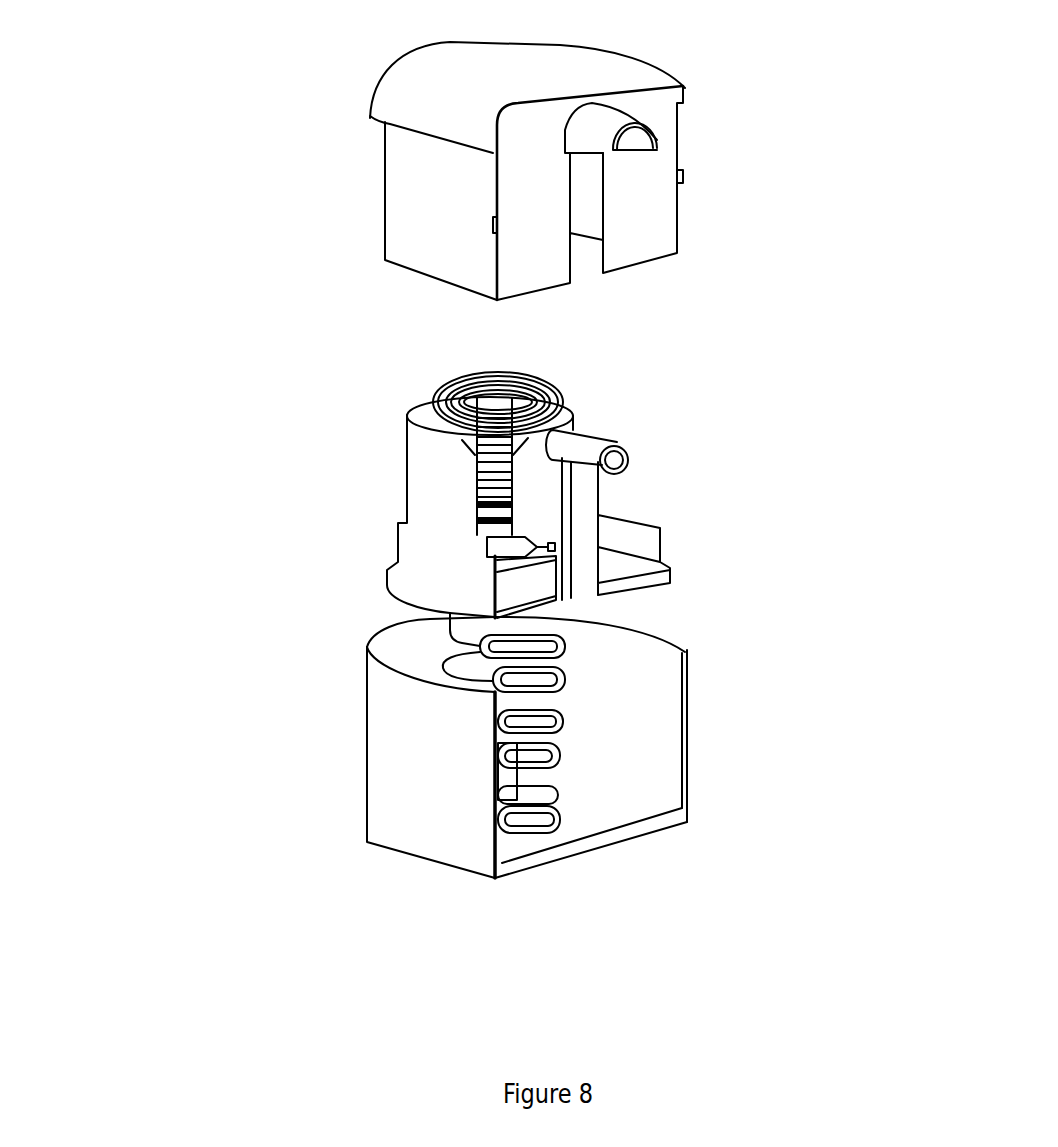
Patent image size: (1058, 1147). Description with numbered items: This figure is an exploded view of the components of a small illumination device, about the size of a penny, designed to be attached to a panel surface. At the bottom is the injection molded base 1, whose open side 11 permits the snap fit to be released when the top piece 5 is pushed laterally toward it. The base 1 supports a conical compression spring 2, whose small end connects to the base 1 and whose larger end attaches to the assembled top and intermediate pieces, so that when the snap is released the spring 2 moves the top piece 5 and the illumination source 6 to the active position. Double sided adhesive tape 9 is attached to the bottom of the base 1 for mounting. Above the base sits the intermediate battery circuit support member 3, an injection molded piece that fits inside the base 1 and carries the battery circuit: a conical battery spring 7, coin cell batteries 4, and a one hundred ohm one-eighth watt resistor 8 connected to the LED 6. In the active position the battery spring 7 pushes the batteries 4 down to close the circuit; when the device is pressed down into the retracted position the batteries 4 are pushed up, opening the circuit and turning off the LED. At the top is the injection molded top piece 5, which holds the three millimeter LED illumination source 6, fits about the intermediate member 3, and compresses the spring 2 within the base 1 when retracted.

The base 1 is at (420, 828).
The compression spring 2 is at (752, 885).
The intermediate battery circuit support member 3 is at (400, 598).
The batteries 4 is at (488, 526).
The top piece 5 is at (610, 70).
The illumination source 6 is at (703, 440).
The battery spring 7 is at (440, 390).
The resistor 8 is at (213, 530).
The double sided adhesive tape 9 is at (547, 960).
The open side 11 is at (644, 705).